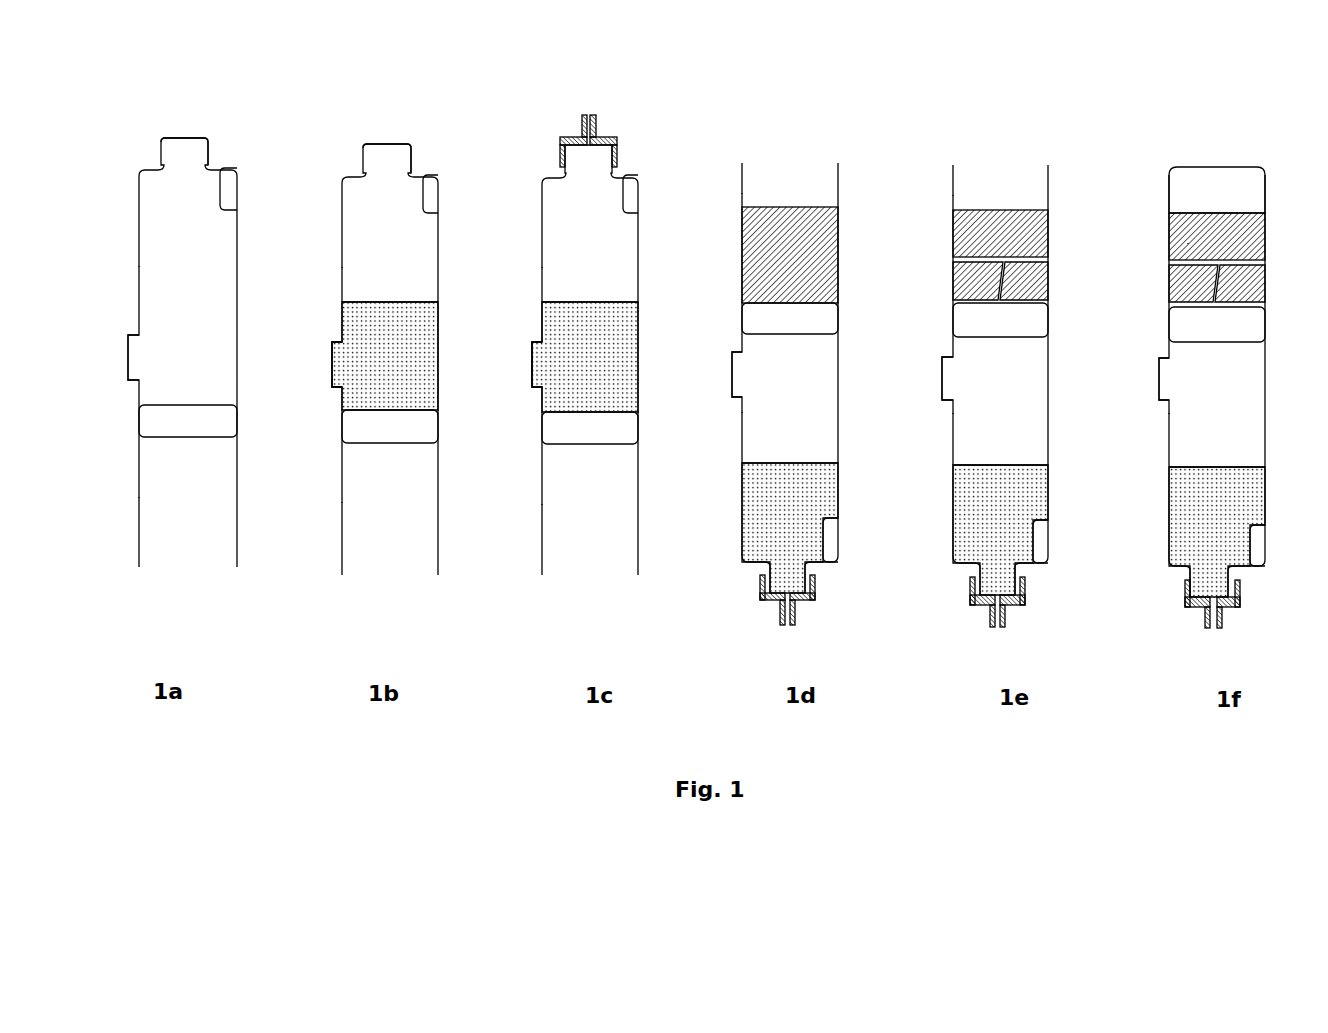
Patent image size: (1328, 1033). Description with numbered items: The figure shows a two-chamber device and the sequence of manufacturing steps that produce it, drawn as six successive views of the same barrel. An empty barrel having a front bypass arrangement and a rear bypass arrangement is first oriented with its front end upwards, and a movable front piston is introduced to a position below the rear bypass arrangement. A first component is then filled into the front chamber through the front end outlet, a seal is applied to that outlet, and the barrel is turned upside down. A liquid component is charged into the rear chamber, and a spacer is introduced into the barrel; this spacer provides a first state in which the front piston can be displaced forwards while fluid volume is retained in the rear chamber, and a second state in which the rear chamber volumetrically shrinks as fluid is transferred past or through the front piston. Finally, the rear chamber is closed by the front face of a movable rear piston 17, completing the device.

The rear piston 17 is at (1248, 198).